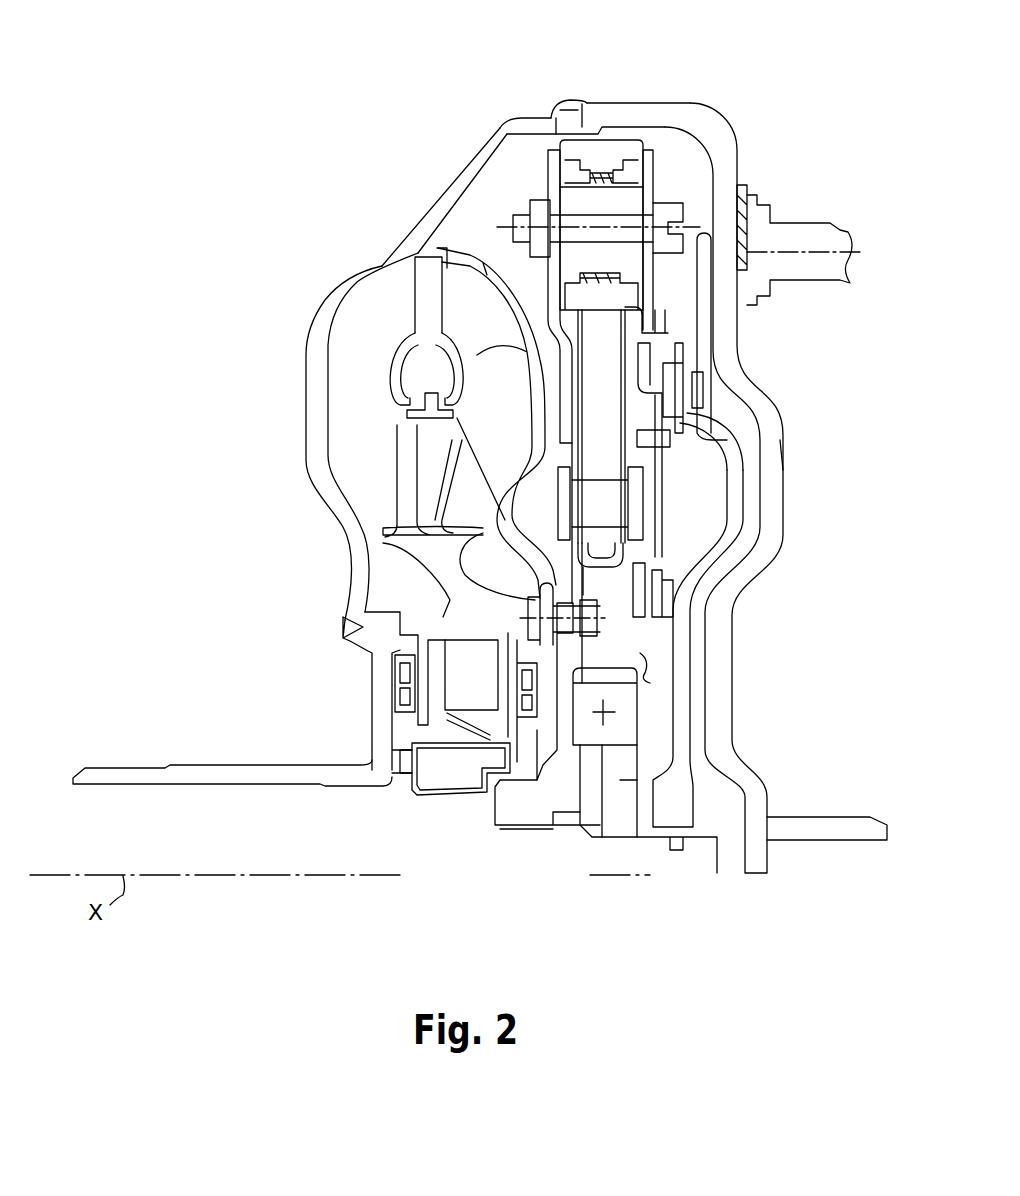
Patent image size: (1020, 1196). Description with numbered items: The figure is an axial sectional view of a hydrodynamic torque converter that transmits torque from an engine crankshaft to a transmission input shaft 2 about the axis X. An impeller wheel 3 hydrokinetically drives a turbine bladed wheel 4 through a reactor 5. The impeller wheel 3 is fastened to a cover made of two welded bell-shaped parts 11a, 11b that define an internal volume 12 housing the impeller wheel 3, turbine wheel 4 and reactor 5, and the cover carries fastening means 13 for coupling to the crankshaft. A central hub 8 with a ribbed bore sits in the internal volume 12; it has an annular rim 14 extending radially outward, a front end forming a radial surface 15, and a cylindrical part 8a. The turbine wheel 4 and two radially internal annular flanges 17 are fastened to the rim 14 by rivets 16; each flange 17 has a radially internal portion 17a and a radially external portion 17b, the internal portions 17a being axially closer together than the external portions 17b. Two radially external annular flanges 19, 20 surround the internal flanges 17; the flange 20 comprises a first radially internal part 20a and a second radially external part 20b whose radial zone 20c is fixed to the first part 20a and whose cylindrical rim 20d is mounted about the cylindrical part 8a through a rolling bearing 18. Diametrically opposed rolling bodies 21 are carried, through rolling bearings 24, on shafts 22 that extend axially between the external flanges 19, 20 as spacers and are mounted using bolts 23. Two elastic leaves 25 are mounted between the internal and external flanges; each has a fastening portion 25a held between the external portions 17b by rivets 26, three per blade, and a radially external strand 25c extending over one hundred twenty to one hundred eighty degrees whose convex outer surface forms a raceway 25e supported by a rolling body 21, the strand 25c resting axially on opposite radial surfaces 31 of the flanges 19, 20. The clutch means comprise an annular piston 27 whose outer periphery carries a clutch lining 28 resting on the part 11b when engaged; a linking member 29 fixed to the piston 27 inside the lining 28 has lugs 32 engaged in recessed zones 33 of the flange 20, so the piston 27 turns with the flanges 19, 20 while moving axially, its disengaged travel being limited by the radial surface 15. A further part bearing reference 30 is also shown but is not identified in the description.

The transmission input shaft 2 is at (700, 860).
The impeller wheel 3 is at (352, 395).
The turbine bladed wheel 4 is at (557, 296).
The reactor 5 is at (440, 460).
The central hub 8 is at (553, 813).
The cylindrical part of the central hub 8a is at (581, 827).
The bell-shaped part 11a is at (475, 165).
The bell-shaped part 11b is at (700, 118).
The internal volume 12 is at (518, 172).
The fastening means 13 is at (787, 237).
The annular rim 14 is at (540, 747).
The radial surface 15 is at (605, 750).
The rivets 16 is at (460, 578).
The radially internal annular flanges 17 is at (500, 532).
The radially internal portion 17a is at (585, 592).
The radially external portion 17b is at (727, 550).
The rolling bearing 18 is at (573, 743).
The external flange 19 is at (473, 325).
The external flange 20 is at (650, 295).
The first radially internal part 20a is at (720, 353).
The second radially external part 20b is at (637, 607).
The radial zone 20c is at (699, 691).
The cylindrical rim 20d is at (603, 670).
The rolling bodies 21 is at (604, 157).
The shafts 22 is at (630, 200).
The bolts 23 is at (577, 223).
The rolling bearings 24 is at (617, 177).
The elastic leaves 25 is at (638, 500).
The fastening portion 25a is at (735, 563).
The radially external strand 25c is at (692, 400).
The raceway 25e is at (640, 345).
The rivets 26 is at (620, 557).
The annular piston 27 is at (603, 455).
The clutch lining 28 is at (722, 288).
The linking member 29 is at (775, 443).
The cup plate 30 is at (600, 408).
The radial surfaces 31 is at (397, 373).
The lugs 32 is at (620, 440).
The recessed zones 33 is at (600, 408).